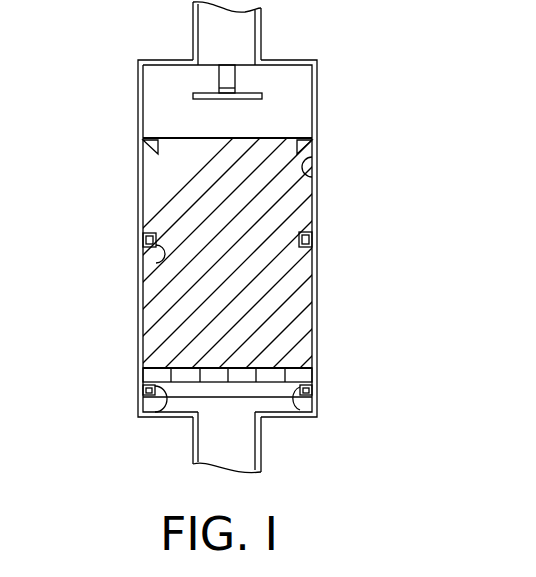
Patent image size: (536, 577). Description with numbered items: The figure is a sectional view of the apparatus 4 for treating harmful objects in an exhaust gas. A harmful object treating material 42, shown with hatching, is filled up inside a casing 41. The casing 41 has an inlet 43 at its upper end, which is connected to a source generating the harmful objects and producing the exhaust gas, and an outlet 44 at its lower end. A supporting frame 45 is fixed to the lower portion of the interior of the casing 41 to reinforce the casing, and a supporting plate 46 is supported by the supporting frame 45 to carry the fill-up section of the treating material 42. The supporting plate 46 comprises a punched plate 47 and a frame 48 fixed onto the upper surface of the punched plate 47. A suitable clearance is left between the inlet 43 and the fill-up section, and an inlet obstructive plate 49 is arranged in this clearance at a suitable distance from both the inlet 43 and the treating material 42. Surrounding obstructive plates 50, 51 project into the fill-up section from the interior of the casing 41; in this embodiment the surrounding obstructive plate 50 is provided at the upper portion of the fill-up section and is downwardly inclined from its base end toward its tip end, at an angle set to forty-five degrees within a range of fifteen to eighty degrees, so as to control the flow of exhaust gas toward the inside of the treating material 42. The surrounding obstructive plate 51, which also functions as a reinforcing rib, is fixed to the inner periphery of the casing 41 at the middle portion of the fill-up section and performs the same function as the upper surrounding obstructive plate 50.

The apparatus 4 is at (167, 45).
The casing 41 is at (318, 95).
The harmful object treating material 42 is at (285, 213).
The inlet 43 is at (245, 30).
The outlet 44 is at (207, 445).
The supporting frame 45 is at (295, 403).
The supporting plate 46 is at (183, 365).
The punched plate 47 is at (263, 383).
The frame 48 is at (297, 370).
The inlet obstructive plate 49 is at (220, 99).
The surrounding obstructive plate 50 is at (150, 152).
The surrounding obstructive plate 51 is at (160, 250).